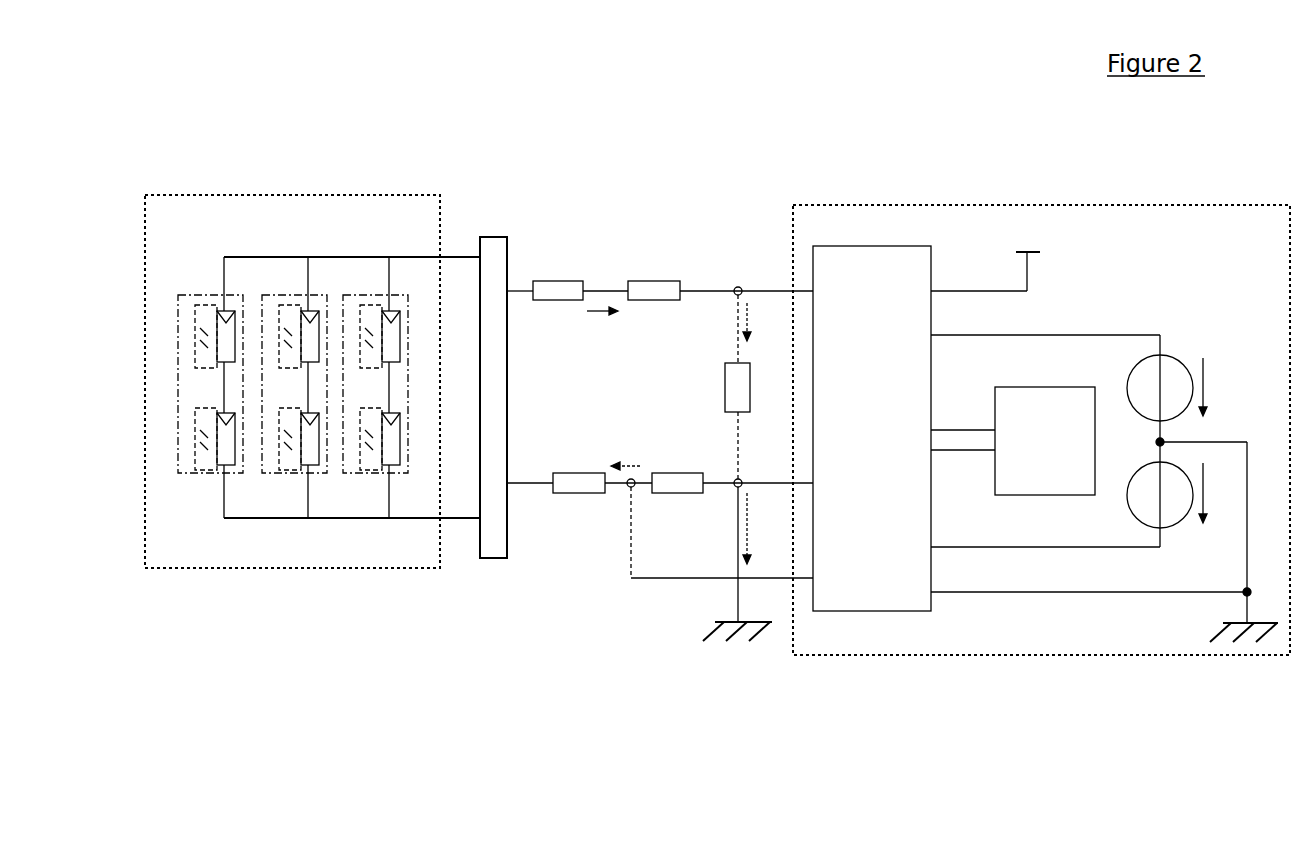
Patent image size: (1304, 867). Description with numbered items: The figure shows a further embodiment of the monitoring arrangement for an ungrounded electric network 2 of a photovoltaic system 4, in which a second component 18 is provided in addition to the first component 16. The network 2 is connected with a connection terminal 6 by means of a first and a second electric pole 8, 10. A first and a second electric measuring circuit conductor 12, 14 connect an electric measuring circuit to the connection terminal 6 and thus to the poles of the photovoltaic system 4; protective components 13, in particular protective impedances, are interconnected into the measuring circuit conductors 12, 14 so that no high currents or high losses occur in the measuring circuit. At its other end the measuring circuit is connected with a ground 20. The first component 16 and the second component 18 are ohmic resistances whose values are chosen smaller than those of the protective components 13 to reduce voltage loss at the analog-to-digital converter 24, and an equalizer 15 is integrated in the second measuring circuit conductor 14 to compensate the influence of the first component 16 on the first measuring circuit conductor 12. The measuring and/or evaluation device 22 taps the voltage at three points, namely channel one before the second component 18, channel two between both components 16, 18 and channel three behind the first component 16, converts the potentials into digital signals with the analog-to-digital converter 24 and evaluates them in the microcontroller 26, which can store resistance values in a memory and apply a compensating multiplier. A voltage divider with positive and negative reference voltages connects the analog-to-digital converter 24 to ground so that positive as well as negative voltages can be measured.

The ungrounded electric network 2 is at (312, 325).
The photovoltaic system 4 is at (351, 268).
The connection terminal 6 is at (503, 319).
The first electric pole 8 is at (459, 586).
The second electric pole 10 is at (463, 171).
The first electric measuring circuit conductor 12 is at (660, 438).
The protective components 13 is at (563, 388).
The second electric measuring circuit conductor 14 is at (660, 251).
The equalizer 15 is at (657, 230).
The first component 16 is at (677, 444).
The second component 18 is at (703, 425).
The ground 20 is at (722, 592).
The measuring and/or evaluation device 22 is at (1041, 377).
The analog-to-digital converter 24 is at (872, 355).
The microcontroller 26 is at (1016, 299).